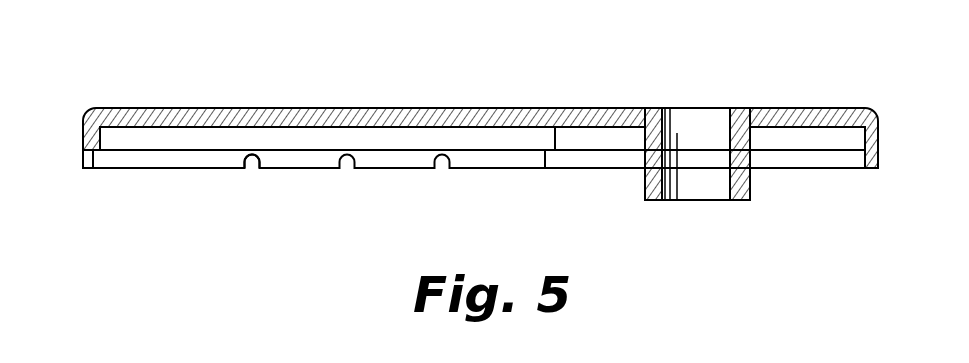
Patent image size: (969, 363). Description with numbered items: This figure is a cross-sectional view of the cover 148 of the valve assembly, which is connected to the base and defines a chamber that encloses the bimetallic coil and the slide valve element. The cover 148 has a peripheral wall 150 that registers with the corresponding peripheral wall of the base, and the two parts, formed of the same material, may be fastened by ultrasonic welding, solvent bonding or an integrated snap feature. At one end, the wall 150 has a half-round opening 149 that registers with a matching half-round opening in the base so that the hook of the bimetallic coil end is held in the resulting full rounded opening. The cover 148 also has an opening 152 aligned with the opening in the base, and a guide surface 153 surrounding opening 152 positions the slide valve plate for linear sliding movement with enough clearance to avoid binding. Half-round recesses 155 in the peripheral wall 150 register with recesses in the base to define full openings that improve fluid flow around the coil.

The cover 148 is at (588, 108).
The half-round opening 149 is at (78, 158).
The peripheral wall 150 is at (878, 153).
The opening 152 is at (731, 172).
The guide surface 153 is at (658, 202).
The half-round recesses 155 is at (251, 169).